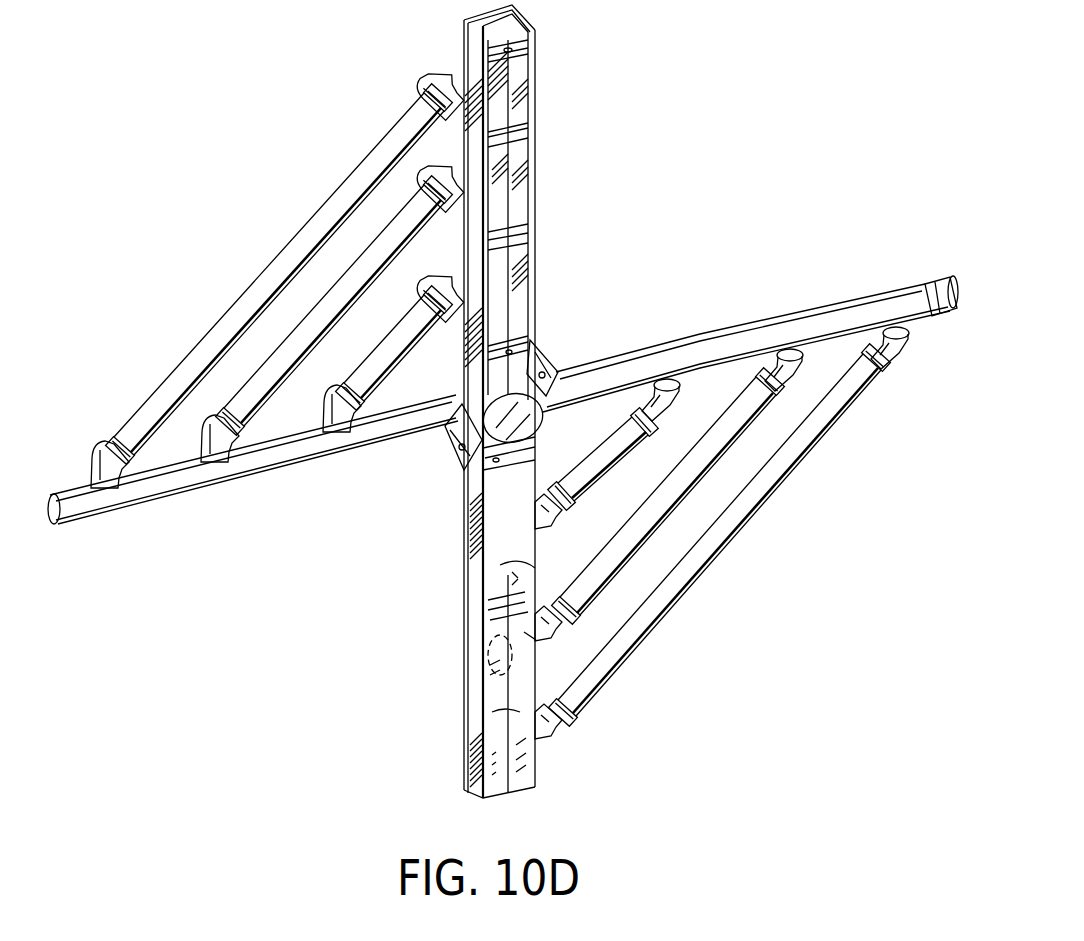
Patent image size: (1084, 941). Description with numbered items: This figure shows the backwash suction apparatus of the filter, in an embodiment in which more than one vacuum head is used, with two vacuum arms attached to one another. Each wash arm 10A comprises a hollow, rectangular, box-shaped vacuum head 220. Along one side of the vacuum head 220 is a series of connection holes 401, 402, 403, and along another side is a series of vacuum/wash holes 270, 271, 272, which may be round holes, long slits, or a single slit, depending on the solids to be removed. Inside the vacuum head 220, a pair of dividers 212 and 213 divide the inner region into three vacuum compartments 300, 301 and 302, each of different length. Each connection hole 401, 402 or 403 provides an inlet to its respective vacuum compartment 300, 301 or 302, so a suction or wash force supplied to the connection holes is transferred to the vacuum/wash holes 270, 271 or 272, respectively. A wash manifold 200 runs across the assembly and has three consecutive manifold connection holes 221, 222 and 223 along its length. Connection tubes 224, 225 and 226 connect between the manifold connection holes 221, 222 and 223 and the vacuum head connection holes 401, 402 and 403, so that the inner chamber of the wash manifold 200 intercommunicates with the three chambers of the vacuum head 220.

The wash arm 10A is at (358, 651).
The wash manifold 200 is at (702, 345).
The manifold connection hole 221 is at (654, 388).
The manifold connection hole 222 is at (773, 358).
The manifold connection hole 223 is at (886, 330).
The connection tube 224 is at (618, 446).
The connection tube 225 is at (722, 442).
The connection tube 226 is at (866, 384).
The connection hole 401 is at (552, 732).
The connection hole 402 is at (542, 618).
The connection hole 403 is at (546, 502).
The vacuum/wash hole 271 is at (524, 632).
The vacuum compartment 302 is at (500, 497).
The vacuum/wash hole 272 is at (500, 528).
The vacuum head 220 is at (512, 556).
The divider 213 is at (500, 598).
The divider 212 is at (500, 645).
The vacuum compartment 301 is at (500, 680).
The vacuum/wash hole 270 is at (500, 710).
The vacuum compartment 300 is at (478, 762).